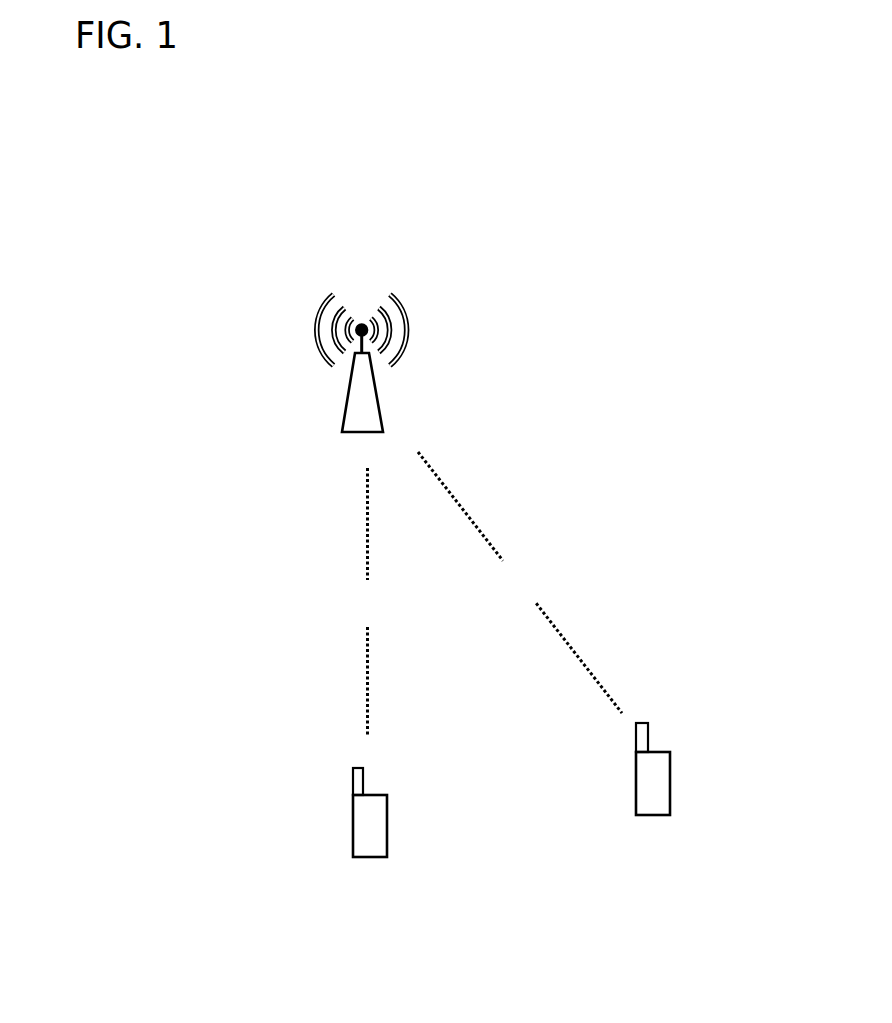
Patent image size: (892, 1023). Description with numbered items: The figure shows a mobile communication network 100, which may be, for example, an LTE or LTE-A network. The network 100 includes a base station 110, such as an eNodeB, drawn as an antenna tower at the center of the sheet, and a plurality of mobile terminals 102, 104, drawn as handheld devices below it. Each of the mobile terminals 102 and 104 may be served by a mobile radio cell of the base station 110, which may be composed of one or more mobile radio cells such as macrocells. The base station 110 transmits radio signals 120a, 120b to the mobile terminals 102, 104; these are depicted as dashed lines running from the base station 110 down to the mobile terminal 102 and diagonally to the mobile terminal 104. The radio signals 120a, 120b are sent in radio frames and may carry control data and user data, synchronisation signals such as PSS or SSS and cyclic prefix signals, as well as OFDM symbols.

The mobile communication network 100 is at (679, 197).
The base station 110 is at (338, 393).
The mobile terminal 102 is at (365, 818).
The mobile terminal 104 is at (650, 777).
The radio signal 120a is at (368, 601).
The radio signal 120b is at (520, 582).